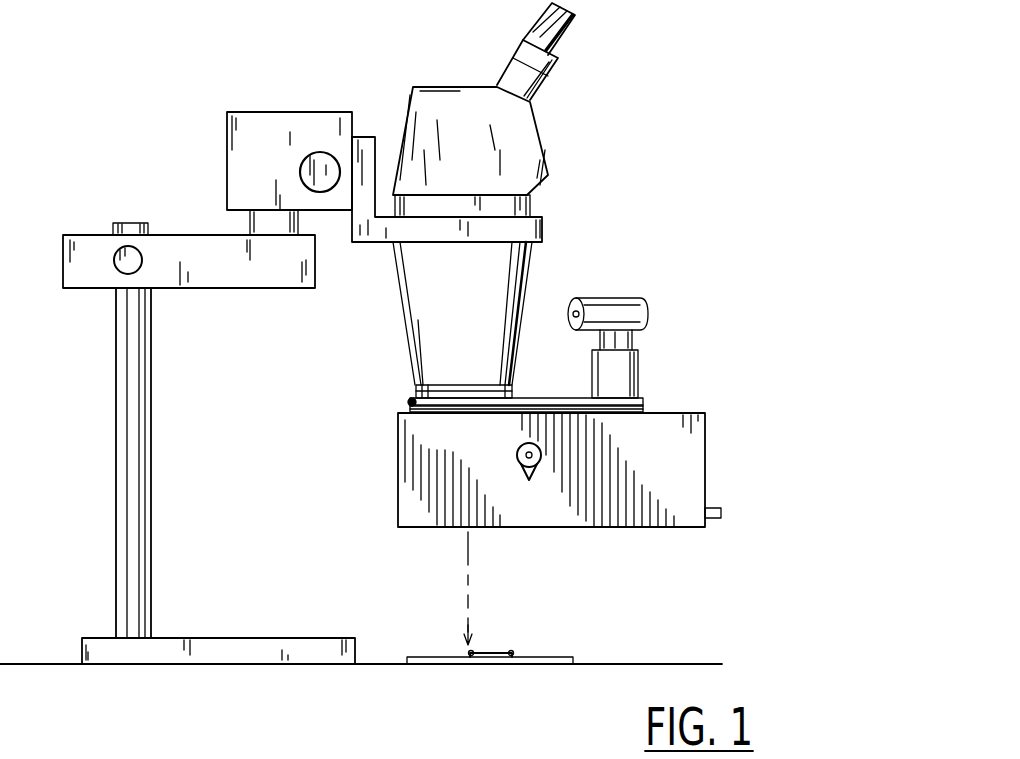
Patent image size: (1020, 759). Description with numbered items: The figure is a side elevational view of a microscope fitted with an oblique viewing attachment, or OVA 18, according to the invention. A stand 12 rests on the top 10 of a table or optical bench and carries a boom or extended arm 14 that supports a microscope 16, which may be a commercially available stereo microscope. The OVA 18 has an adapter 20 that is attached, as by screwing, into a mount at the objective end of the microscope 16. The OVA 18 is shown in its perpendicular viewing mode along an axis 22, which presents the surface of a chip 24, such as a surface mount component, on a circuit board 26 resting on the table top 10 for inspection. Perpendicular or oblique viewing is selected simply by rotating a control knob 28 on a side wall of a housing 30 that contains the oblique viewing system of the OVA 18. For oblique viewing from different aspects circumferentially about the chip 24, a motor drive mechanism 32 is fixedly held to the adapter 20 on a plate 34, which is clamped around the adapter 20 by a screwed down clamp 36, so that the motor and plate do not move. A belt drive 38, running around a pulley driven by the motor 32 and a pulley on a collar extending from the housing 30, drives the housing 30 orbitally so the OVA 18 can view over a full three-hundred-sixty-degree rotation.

The top 10 is at (630, 664).
The stand 12 is at (148, 544).
The boom or extended arm 14 is at (380, 242).
The microscope 16 is at (420, 320).
The OVA 18 is at (402, 458).
The adapter 20 is at (512, 389).
The axis 22 is at (465, 560).
The chip 24 is at (493, 653).
The circuit board 26 is at (547, 657).
The control knob 28 is at (518, 465).
The housing 30 is at (705, 468).
The motor drive mechanism 32 is at (638, 370).
The plate 34 is at (570, 403).
The clamp 36 is at (408, 400).
The belt drive 38 is at (607, 415).